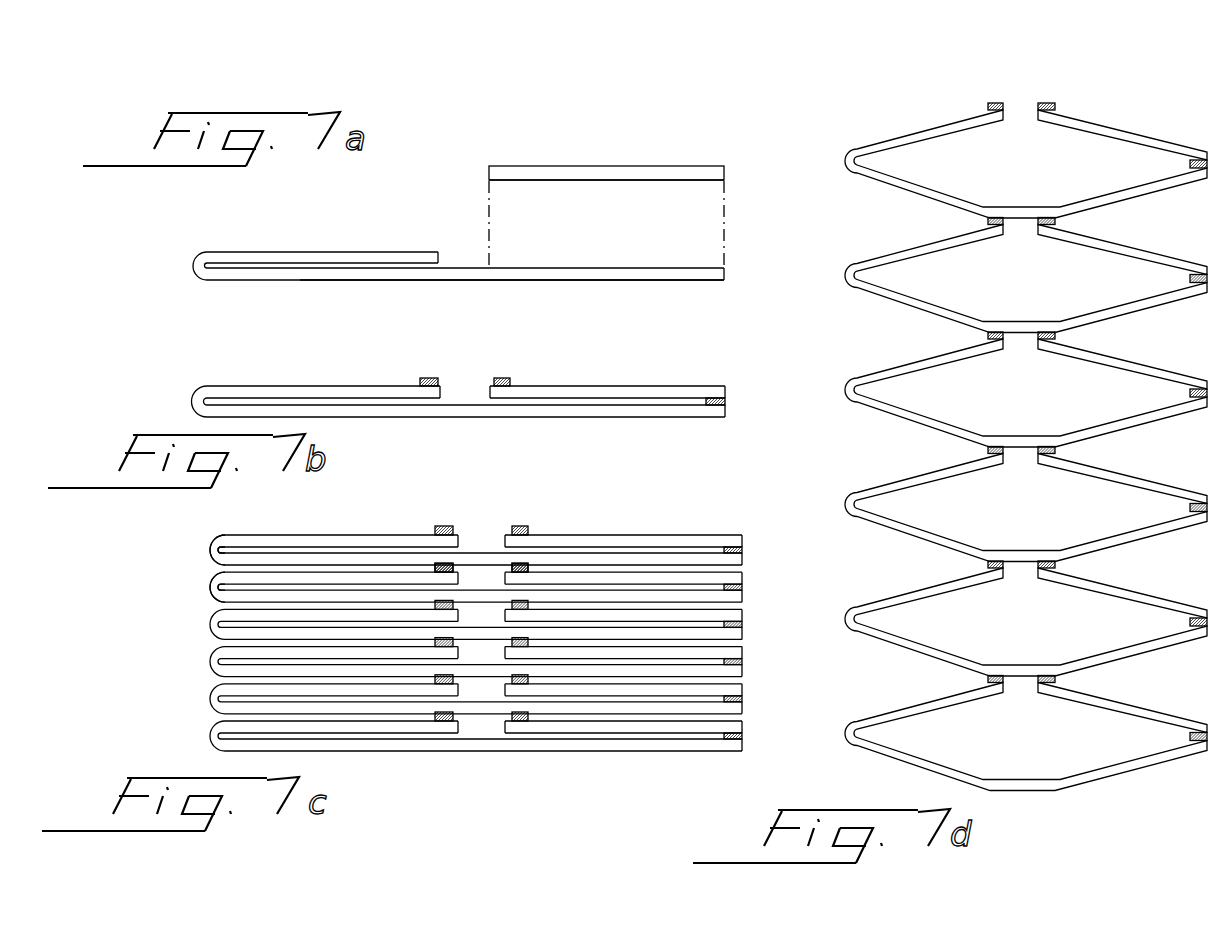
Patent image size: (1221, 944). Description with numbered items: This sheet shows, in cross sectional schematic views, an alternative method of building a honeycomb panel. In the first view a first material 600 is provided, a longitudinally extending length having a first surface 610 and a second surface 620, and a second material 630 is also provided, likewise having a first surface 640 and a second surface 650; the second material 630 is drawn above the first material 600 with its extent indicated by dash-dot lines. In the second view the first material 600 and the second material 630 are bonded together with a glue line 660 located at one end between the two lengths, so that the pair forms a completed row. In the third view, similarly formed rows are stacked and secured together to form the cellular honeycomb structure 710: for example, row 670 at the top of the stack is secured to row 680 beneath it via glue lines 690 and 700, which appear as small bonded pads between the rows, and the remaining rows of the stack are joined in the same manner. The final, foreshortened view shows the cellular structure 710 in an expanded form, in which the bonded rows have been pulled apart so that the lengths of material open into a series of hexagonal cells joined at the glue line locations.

In FIG. 7A, the first material 600 is at (302, 251).
In FIG. 7A, the first surface 610 is at (550, 253).
In FIG. 7A, the second surface 620 is at (602, 292).
In FIG. 7A, the second material 630 is at (633, 165).
In FIG. 7A, the first surface 640 is at (521, 149).
In FIG. 7A, the second surface 650 is at (663, 193).
In FIG. 7B, the glue line 660 is at (728, 400).
In FIG. 7C, the row 670 is at (208, 551).
In FIG. 7C, the row 680 is at (208, 590).
In FIG. 7C, the glue line 690 is at (455, 566).
In FIG. 7C, the glue line 700 is at (530, 567).
In FIG. 7C, the cellular honeycomb structure 710 is at (689, 515).
In FIG. 7D, the cellular honeycomb structure 710 is at (1117, 110).